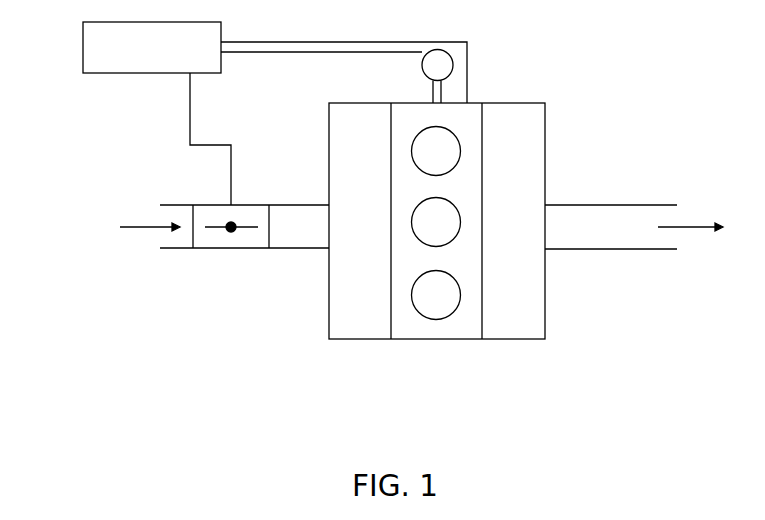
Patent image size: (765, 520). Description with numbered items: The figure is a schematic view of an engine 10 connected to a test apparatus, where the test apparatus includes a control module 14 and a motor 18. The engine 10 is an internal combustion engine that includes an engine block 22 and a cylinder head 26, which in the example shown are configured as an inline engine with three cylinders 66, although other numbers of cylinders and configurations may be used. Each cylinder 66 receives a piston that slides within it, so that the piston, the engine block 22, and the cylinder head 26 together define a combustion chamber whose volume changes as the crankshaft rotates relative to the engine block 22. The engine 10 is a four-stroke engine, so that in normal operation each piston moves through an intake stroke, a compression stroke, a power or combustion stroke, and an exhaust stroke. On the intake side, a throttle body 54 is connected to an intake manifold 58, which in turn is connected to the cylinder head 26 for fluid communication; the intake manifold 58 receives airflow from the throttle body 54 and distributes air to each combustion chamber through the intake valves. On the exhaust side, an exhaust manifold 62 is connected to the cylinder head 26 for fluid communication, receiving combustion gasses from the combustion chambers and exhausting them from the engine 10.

The engine 10 is at (295, 383).
The control module 14 is at (83, 42).
The motor 18 is at (422, 63).
The engine block 22 is at (467, 342).
The cylinder head 26 is at (399, 333).
The throttle body 54 is at (225, 250).
The intake manifold 58 is at (337, 297).
The exhaust manifold 62 is at (537, 297).
The cylinders 66 is at (446, 153).